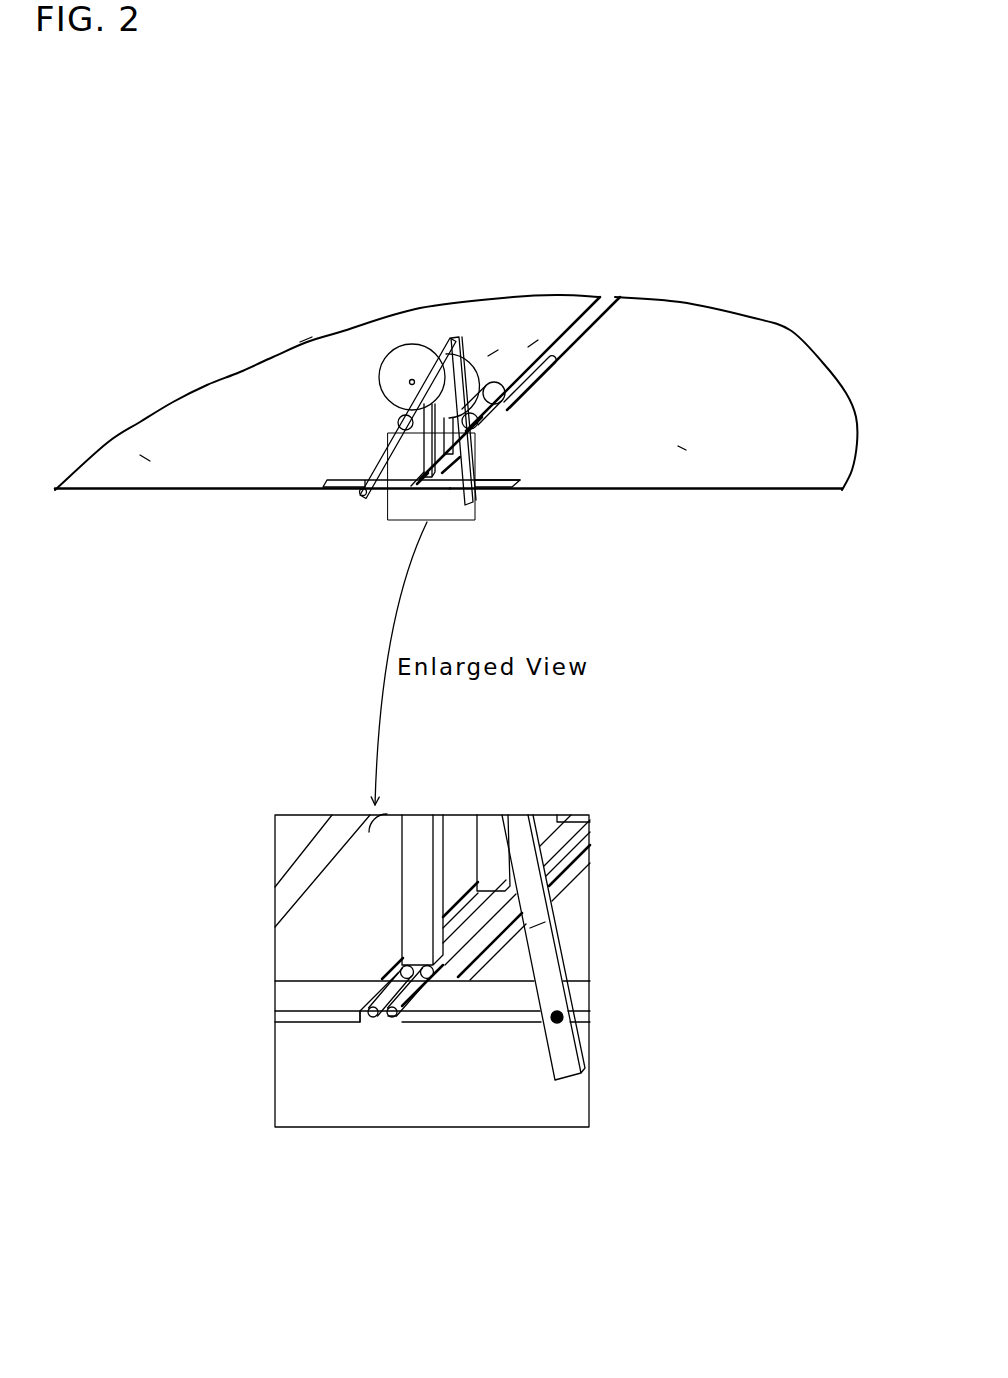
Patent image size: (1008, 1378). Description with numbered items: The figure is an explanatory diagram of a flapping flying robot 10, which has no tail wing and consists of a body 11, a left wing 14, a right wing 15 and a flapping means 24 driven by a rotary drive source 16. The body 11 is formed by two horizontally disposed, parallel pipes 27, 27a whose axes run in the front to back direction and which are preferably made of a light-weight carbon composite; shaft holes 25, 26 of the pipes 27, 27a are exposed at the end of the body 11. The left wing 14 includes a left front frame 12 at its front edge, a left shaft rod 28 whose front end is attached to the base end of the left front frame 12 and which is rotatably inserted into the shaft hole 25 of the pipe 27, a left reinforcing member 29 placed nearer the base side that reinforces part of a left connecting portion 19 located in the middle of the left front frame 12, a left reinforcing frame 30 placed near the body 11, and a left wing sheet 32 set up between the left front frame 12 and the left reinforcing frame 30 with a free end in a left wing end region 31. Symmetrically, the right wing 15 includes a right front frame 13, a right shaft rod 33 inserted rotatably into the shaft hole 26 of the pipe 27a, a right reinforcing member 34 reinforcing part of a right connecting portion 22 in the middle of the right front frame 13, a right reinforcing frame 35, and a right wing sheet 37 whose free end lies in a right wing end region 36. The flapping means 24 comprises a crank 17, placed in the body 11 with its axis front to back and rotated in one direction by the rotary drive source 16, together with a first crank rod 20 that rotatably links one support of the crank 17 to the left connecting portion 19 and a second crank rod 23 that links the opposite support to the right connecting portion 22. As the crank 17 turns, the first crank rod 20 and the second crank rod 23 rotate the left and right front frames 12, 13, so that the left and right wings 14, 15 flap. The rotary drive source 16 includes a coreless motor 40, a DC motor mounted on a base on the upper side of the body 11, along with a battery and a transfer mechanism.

The flapping flying robot 10 is at (462, 175).
The body 11 is at (532, 344).
The left front frame 12 is at (97, 492).
The right front frame 13 is at (752, 491).
The left wing 14 is at (152, 403).
The right wing 15 is at (772, 305).
The rotary drive source 16 is at (493, 352).
The crank 17 is at (397, 365).
The left connecting portion 19 is at (360, 497).
The first crank rod 20 is at (385, 466).
The right connecting portion 22 is at (473, 512).
The second crank rod 23 is at (453, 463).
The flapping means 24 is at (430, 330).
The shaft hole 25 is at (385, 966).
The shaft hole 26 is at (437, 985).
The pipe 27 is at (540, 387).
The pipe 27a is at (533, 393).
The left shaft rod 28 is at (360, 1020).
The left reinforcing member 29 is at (340, 481).
The left reinforcing frame 30 is at (582, 322).
The left wing end region 31 is at (306, 339).
The left wing sheet 32 is at (145, 458).
The right shaft rod 33 is at (392, 1018).
The right reinforcing member 34 is at (500, 482).
The right reinforcing frame 35 is at (547, 372).
The right wing end region 36 is at (790, 330).
The right wing sheet 37 is at (682, 448).
The coreless motor 40 is at (505, 396).